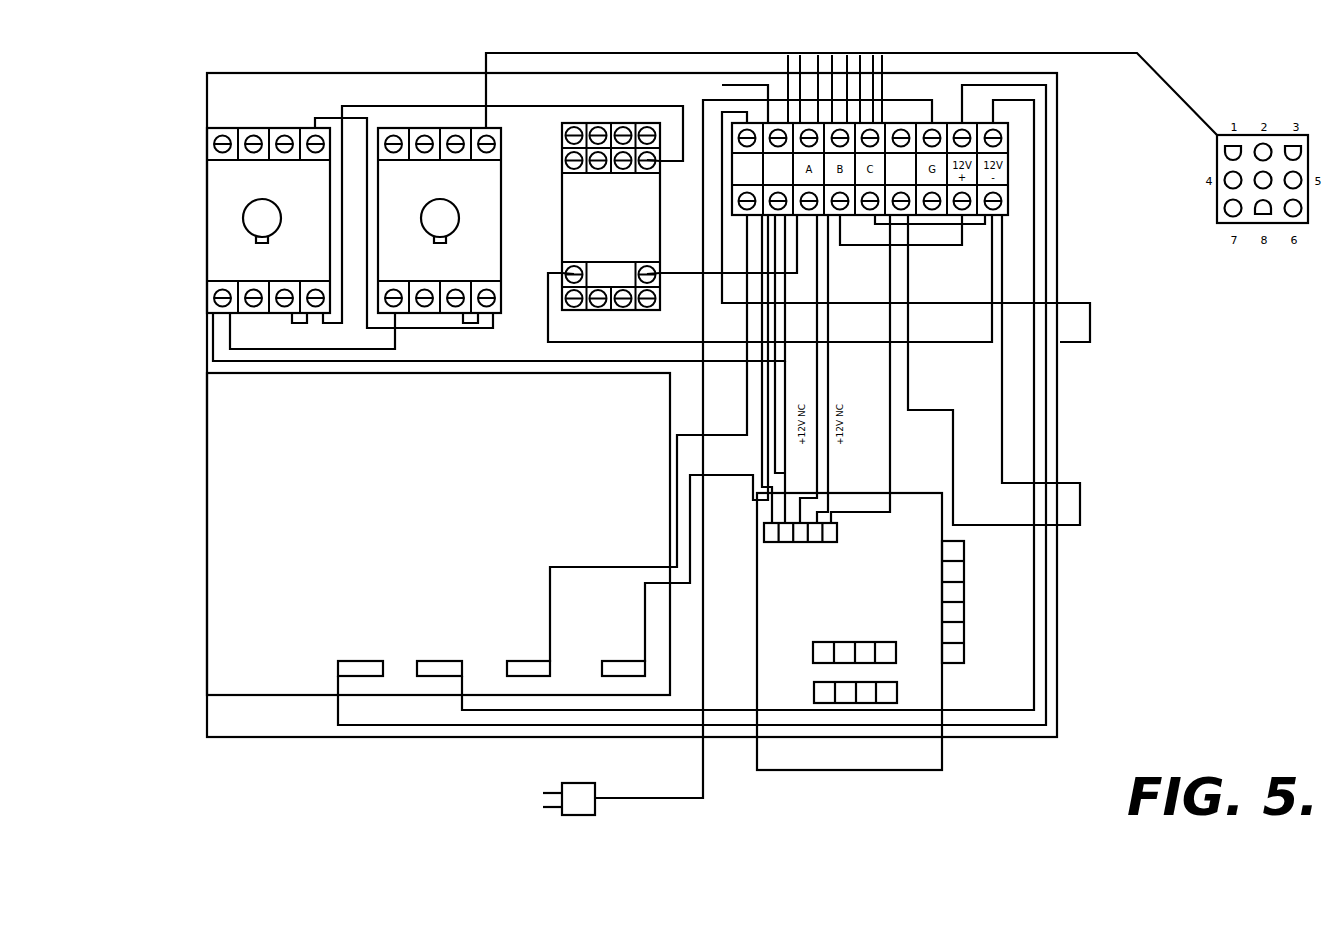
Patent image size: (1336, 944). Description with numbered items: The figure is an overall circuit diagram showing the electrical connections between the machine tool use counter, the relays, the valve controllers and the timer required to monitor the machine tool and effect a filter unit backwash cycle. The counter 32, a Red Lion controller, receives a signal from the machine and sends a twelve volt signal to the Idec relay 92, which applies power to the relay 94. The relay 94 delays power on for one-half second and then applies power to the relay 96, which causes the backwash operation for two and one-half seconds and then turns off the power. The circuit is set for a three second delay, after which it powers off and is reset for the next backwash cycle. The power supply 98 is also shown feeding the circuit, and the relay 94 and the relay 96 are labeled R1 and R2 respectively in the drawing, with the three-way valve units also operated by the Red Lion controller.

The counter 32 is at (995, 590).
The Idec relay 92 is at (645, 218).
The relay 94 is at (416, 208).
The relay 96 is at (319, 208).
The power supply 98 is at (438, 534).
The relay R1 is at (435, 106).
The relay R2 is at (225, 190).